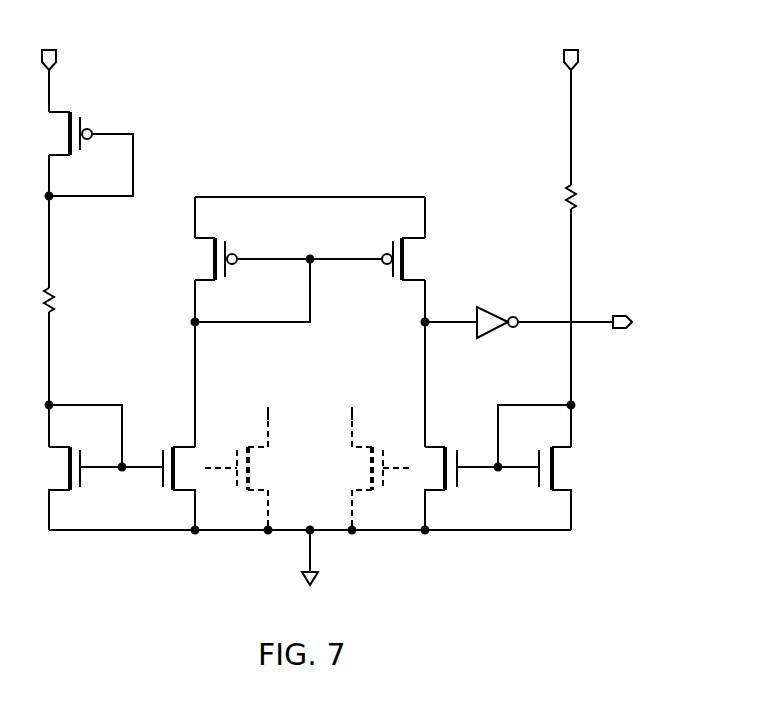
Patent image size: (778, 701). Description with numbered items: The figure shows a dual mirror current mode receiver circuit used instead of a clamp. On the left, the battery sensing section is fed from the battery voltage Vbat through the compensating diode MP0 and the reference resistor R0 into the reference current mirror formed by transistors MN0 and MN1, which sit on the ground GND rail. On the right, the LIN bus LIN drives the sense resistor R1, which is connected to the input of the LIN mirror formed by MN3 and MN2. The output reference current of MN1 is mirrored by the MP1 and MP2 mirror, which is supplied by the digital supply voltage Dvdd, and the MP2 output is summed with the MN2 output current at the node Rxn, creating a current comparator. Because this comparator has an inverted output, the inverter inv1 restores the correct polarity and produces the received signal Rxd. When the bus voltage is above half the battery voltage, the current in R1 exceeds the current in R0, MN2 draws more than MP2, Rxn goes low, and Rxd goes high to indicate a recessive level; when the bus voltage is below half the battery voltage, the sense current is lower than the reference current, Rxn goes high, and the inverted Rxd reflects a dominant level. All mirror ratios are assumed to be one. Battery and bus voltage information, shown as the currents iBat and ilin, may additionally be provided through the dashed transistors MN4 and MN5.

The compensating diode MP0 is at (90, 143).
The current mirror transistor MP1 is at (216, 247).
The current mirror transistor MP2 is at (402, 247).
The reference current mirror transistor MN0 is at (70, 488).
The reference current mirror transistor MN1 is at (172, 488).
The LIN current mirror transistor MN2 is at (447, 488).
The LIN current mirror transistor MN3 is at (548, 488).
The additional transistor MN4 is at (236, 468).
The additional transistor MN5 is at (382, 468).
The reference resistor R0 is at (91, 300).
The sense resistor R1 is at (670, 197).
The inverter inv1 is at (497, 311).
The battery voltage Vbat is at (50, 50).
The LIN bus LIN is at (569, 50).
The ground GND is at (309, 572).
The digital supply voltage Dvdd is at (310, 186).
The received signal output Rxd is at (643, 323).
The comparator output node Rxn is at (444, 385).
The battery current information iBat is at (267, 402).
The LIN current information ilin is at (353, 402).